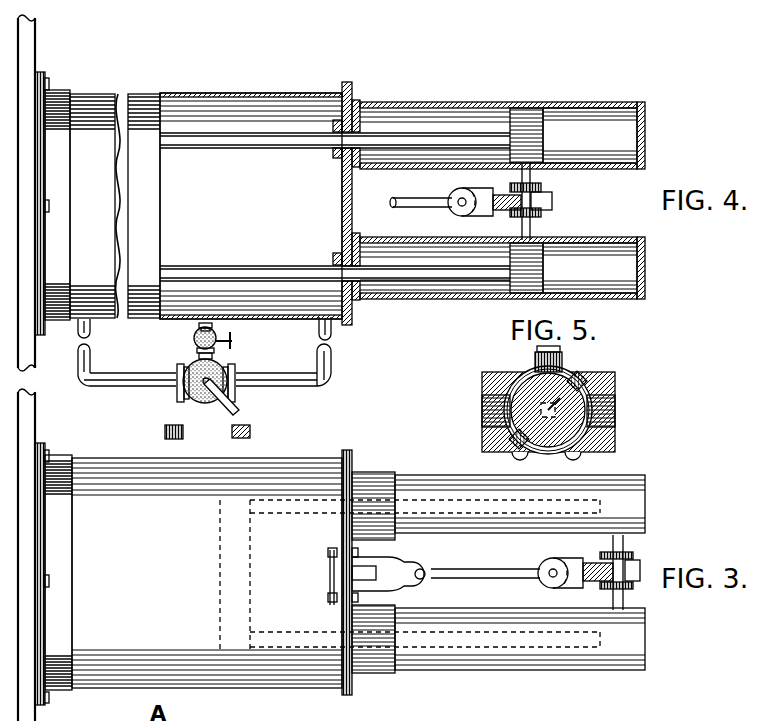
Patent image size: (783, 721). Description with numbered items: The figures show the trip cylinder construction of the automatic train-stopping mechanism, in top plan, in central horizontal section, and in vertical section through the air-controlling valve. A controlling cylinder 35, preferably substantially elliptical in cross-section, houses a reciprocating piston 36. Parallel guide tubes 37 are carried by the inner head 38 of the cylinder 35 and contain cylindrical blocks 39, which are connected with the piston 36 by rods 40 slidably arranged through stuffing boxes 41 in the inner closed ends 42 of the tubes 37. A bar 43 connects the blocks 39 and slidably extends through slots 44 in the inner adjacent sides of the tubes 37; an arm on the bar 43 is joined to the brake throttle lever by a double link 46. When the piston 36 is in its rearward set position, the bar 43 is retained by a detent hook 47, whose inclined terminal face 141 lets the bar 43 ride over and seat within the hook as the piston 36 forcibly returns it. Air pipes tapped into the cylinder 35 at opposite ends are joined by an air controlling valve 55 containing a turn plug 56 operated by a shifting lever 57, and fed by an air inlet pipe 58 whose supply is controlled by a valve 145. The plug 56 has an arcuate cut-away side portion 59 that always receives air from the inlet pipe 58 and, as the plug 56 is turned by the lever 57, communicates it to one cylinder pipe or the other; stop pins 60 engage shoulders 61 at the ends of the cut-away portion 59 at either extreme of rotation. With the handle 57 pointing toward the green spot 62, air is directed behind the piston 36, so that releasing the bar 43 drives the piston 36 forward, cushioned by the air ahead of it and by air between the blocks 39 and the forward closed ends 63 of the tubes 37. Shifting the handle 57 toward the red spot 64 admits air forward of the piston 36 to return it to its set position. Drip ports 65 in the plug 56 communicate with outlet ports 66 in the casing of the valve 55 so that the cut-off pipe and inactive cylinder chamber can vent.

In FIG. 4, the controlling cylinder 35 is at (194, 93).
In FIG. 3, the controlling cylinder 35 is at (198, 572).
In FIG. 4, the reciprocating piston 36 is at (144, 206).
In FIG. 3, the reciprocating piston 36 is at (232, 530).
In FIG. 4, the guide tubes 37 is at (590, 200).
In FIG. 3, the guide tubes 37 is at (520, 572).
In FIG. 4, the inner head 38 is at (349, 82).
In FIG. 4, the cylindrical blocks 39 is at (524, 118).
In FIG. 3, the cylindrical blocks 39 is at (628, 478).
In FIG. 4, the rods 40 is at (248, 141).
In FIG. 3, the rods 40 is at (412, 500).
In FIG. 4, the stuffing boxes 41 is at (342, 160).
In FIG. 4, the inner closed ends 42 is at (342, 175).
In FIG. 4, the bar 43 is at (531, 223).
In FIG. 3, the bar 43 is at (612, 543).
In FIG. 4, the slots 44 is at (610, 240).
In FIG. 4, the double link 46 is at (404, 192).
In FIG. 3, the double link 46 is at (465, 570).
In FIG. 4, the detent hook 47 is at (497, 195).
In FIG. 3, the detent hook 47 is at (592, 583).
In FIG. 4, the air controlling valve 55 is at (194, 368).
In FIG. 5, the turn plug 56 is at (567, 385).
In FIG. 4, the shifting lever 57 is at (241, 413).
In FIG. 5, the shifting lever 57 is at (545, 435).
In FIG. 5, the air inlet pipe 58 is at (532, 356).
In FIG. 5, the arcuate cut-away side portion 59 is at (508, 382).
In FIG. 5, the stop pins 60 is at (588, 374).
In FIG. 5, the shoulders 61 is at (598, 410).
In FIG. 4, the green spot 62 is at (252, 432).
In FIG. 4, the forward closed ends 63 is at (647, 276).
In FIG. 4, the red spot 64 is at (163, 434).
In FIG. 5, the drip ports 65 is at (566, 452).
In FIG. 5, the outlet ports 66 is at (586, 379).
In FIG. 4, the inclined terminal face 141 is at (546, 200).
In FIG. 3, the inclined terminal face 141 is at (641, 568).
In FIG. 4, the valve 145 is at (233, 341).